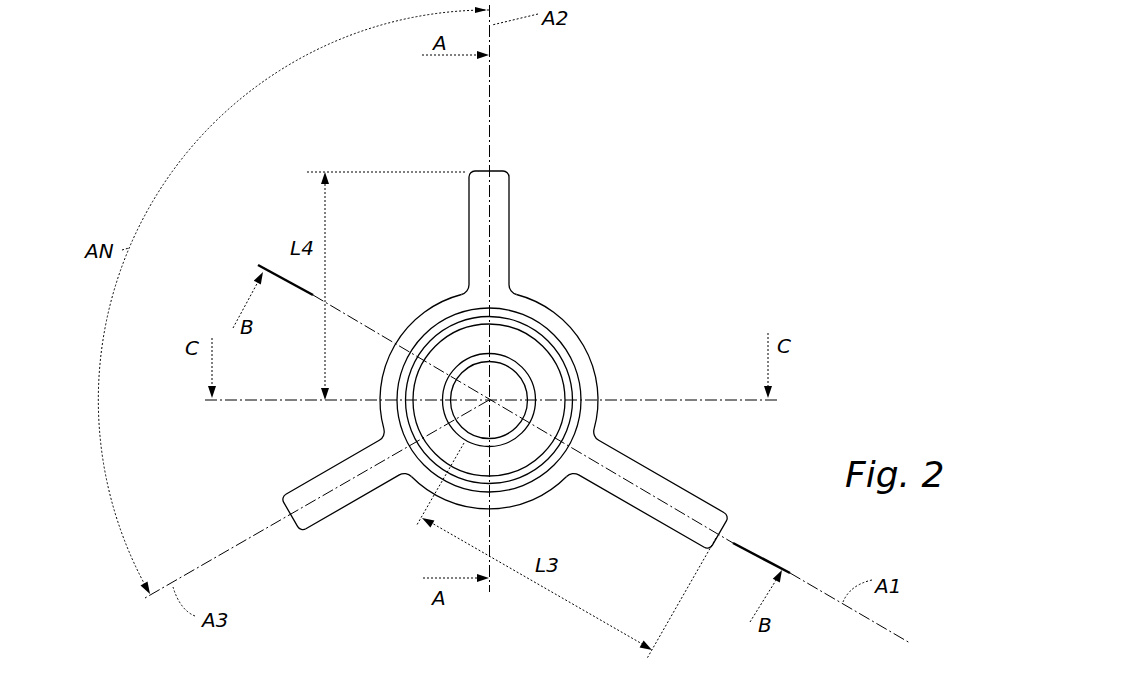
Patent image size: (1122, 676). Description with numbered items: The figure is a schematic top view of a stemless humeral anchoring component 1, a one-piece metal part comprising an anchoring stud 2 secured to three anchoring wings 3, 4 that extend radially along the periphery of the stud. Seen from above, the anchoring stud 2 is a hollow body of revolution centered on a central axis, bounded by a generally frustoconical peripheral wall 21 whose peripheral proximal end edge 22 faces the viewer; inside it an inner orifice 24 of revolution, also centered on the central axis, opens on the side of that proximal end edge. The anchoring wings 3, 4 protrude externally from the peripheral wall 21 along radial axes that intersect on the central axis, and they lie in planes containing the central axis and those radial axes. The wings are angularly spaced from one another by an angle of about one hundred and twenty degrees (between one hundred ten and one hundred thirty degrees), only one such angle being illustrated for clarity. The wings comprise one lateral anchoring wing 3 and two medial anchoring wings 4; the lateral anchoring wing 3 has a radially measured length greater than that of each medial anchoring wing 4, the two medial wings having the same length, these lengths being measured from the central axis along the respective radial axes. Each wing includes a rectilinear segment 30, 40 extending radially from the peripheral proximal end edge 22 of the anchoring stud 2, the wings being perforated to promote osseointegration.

The stemless humeral anchoring component 1 is at (690, 246).
The anchoring stud 2 is at (430, 294).
The lateral anchoring wing 3 is at (722, 493).
The medial anchoring wing 4 is at (512, 164).
The peripheral wall 21 is at (573, 352).
The peripheral proximal end edge 22 is at (603, 377).
The inner orifice 24 is at (542, 349).
The rectilinear segment 30 is at (690, 540).
The rectilinear segment 40 is at (510, 208).